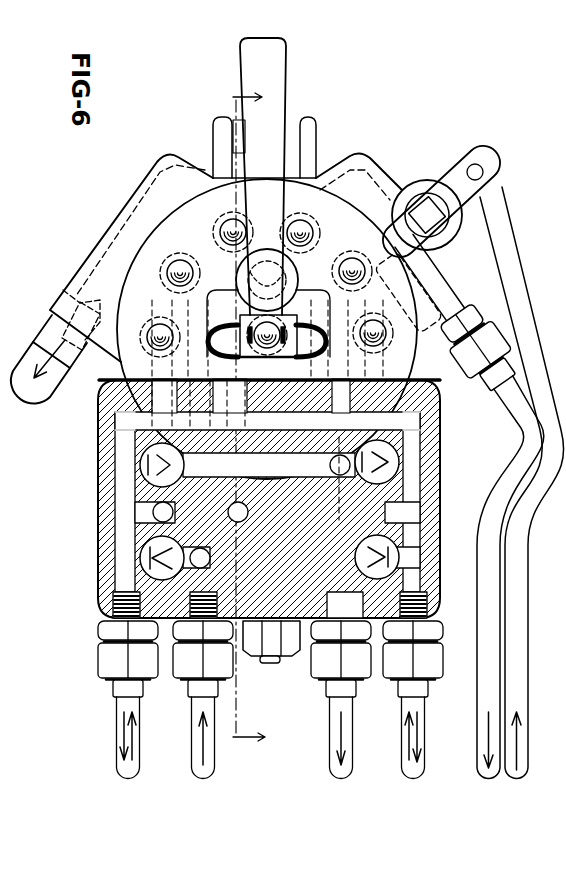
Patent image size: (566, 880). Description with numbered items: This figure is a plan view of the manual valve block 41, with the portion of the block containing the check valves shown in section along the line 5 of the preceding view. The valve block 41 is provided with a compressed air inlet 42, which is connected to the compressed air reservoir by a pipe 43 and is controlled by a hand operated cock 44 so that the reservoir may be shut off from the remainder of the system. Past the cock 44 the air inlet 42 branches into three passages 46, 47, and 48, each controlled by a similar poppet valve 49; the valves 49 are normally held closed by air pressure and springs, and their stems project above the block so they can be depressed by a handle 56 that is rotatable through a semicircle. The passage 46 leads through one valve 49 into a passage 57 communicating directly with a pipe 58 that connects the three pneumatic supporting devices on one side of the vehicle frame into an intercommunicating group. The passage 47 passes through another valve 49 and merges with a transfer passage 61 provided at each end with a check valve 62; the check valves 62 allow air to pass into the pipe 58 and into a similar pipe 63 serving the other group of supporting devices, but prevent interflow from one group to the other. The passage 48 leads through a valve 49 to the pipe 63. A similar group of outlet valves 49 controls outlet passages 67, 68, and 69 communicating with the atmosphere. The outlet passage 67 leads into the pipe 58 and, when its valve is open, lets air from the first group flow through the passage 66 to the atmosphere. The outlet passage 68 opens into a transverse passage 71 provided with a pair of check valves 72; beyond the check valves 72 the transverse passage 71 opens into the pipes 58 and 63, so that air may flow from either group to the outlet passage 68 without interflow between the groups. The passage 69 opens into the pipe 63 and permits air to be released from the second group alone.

The section line 5- 5 is at (236, 417).
The valve block 41 is at (325, 215).
The compressed air inlet 42 is at (463, 182).
The pipe 43 is at (528, 292).
The hand operated cock 44 is at (491, 157).
The passage 46 is at (445, 316).
The passage 47 is at (366, 271).
The passage 48 is at (318, 236).
The valve 49 is at (373, 320).
The handle 56 is at (285, 66).
The passage 57 is at (420, 470).
The pipe 58 is at (423, 722).
The transfer passage 61 is at (338, 467).
The check valve 62 is at (147, 468).
The pipe 63 is at (119, 718).
The passage 66 is at (113, 258).
The outlet passage 67 is at (220, 237).
The outlet passage 68 is at (167, 274).
The passage 69 is at (147, 338).
The transverse passage 71 is at (293, 626).
The check valve 72 is at (148, 562).